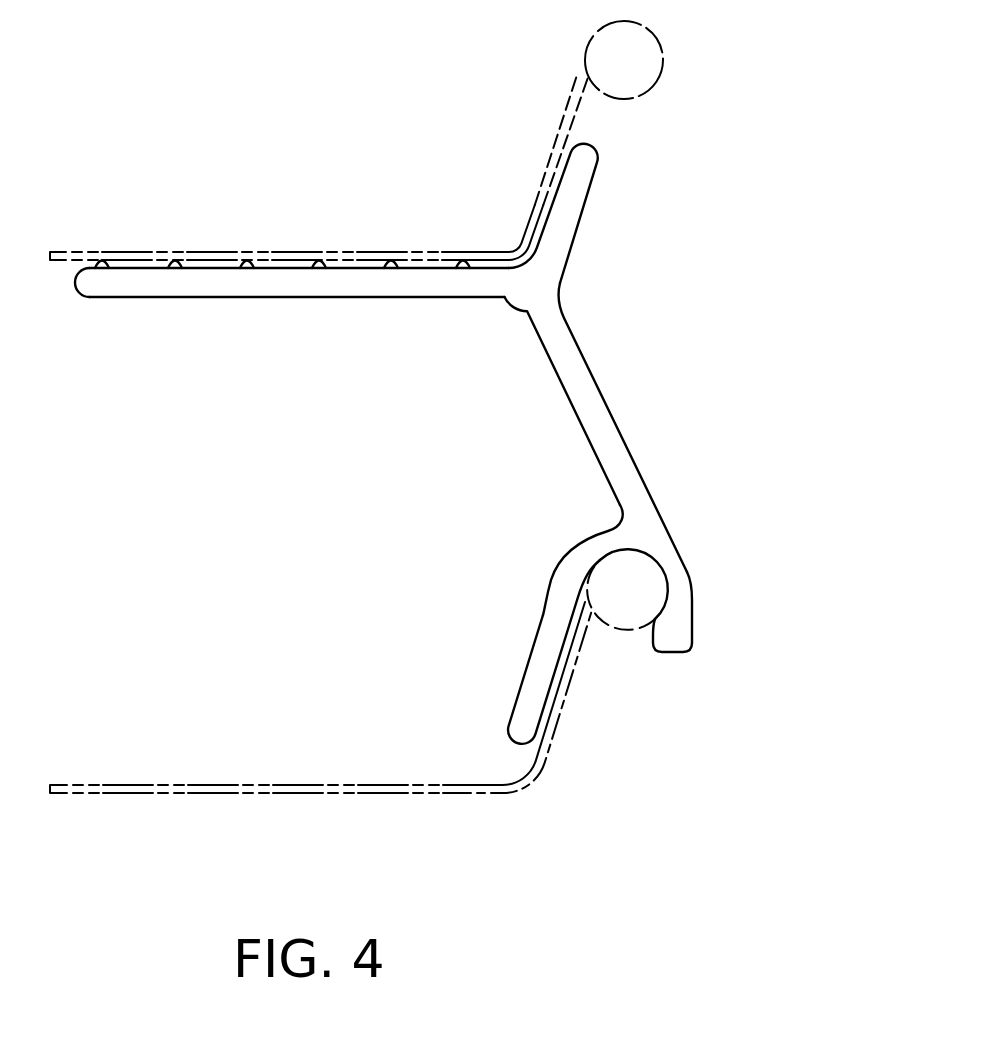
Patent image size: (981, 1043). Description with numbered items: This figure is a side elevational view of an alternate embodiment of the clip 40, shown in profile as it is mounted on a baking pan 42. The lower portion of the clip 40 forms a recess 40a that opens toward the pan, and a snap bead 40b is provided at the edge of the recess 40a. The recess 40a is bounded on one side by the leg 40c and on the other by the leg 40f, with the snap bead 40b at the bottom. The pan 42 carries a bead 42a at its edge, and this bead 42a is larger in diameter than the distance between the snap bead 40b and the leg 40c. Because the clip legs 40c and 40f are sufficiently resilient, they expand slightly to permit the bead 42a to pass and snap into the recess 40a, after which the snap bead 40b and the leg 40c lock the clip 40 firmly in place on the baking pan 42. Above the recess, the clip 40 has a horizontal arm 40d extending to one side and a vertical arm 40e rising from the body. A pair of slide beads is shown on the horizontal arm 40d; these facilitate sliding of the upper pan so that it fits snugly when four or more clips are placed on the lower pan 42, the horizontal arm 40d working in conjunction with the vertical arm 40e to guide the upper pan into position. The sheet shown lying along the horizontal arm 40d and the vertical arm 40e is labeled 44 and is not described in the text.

The clip 40 is at (686, 411).
The recess 40a is at (627, 562).
The snap bead 40b is at (648, 638).
The leg 40c is at (540, 630).
The horizontal arm 40d is at (288, 268).
The vertical arm 40e is at (597, 160).
The leg 40f is at (692, 580).
The baking pan 42 is at (372, 795).
The bead 42a is at (603, 628).
The upper panel sheet 44 is at (387, 268).